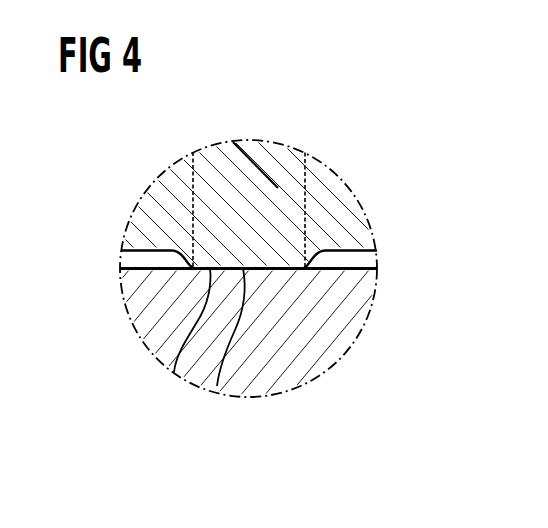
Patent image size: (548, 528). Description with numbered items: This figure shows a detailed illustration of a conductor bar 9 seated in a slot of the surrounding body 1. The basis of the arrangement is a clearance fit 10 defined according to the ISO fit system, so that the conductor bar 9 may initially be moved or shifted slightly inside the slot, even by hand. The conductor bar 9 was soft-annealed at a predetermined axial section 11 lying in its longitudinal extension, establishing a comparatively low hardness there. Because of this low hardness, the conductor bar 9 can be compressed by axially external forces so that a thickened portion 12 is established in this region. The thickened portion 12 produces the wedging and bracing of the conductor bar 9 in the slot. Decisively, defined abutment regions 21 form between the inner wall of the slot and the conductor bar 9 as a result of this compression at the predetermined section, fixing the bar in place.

The first component 1 is at (313, 370).
The conductor bar 9 is at (320, 182).
The clearance fit 10 is at (375, 258).
The axial section 11 is at (250, 152).
The thickened portion 12 is at (174, 372).
The abutment region 21 is at (217, 386).